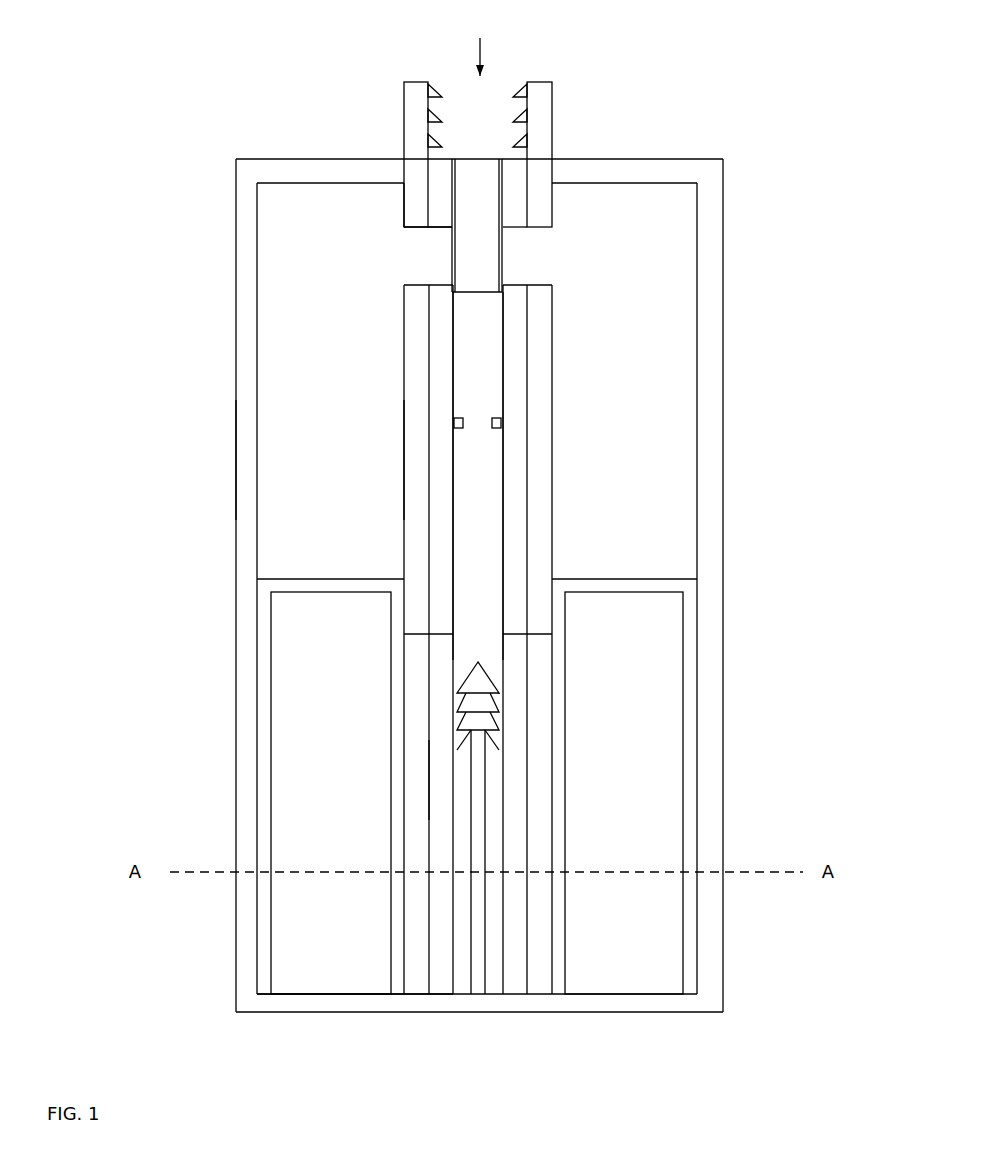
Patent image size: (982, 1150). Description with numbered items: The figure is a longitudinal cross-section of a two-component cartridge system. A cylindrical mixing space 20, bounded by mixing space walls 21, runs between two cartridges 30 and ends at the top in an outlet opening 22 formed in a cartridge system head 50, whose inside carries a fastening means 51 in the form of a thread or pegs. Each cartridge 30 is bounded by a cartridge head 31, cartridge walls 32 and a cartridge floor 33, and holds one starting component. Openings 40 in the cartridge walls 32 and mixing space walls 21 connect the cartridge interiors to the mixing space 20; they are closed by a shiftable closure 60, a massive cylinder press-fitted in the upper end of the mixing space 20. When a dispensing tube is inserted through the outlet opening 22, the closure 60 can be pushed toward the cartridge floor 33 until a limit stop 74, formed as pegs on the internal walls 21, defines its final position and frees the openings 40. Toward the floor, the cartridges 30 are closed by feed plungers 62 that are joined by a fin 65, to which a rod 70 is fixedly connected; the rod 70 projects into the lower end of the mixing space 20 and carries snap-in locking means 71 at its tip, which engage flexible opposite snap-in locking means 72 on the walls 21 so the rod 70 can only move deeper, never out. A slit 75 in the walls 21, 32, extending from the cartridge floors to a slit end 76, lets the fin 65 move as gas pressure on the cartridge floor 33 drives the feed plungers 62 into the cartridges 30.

The mixing space 20 is at (487, 137).
The mixing space walls 21 is at (443, 383).
The outlet opening 22 is at (478, 44).
The cartridges 30 is at (337, 290).
The cartridge heads 31 is at (625, 168).
The cartridge walls 32 is at (415, 435).
The cartridge floor 33 is at (583, 1042).
The openings 40 is at (413, 255).
The cartridge system head 50 is at (415, 145).
The fastening means 51 is at (428, 92).
The shiftable closure 60 is at (487, 182).
The feed plungers 62 is at (263, 615).
The fin 65 is at (454, 1003).
The rod 70 is at (477, 779).
The snap-in locking means 71 is at (477, 722).
The opposite snap-in locking means 72 is at (502, 733).
The limit stop 74 is at (457, 423).
The slit 75 is at (523, 760).
The slit end 76 is at (413, 635).